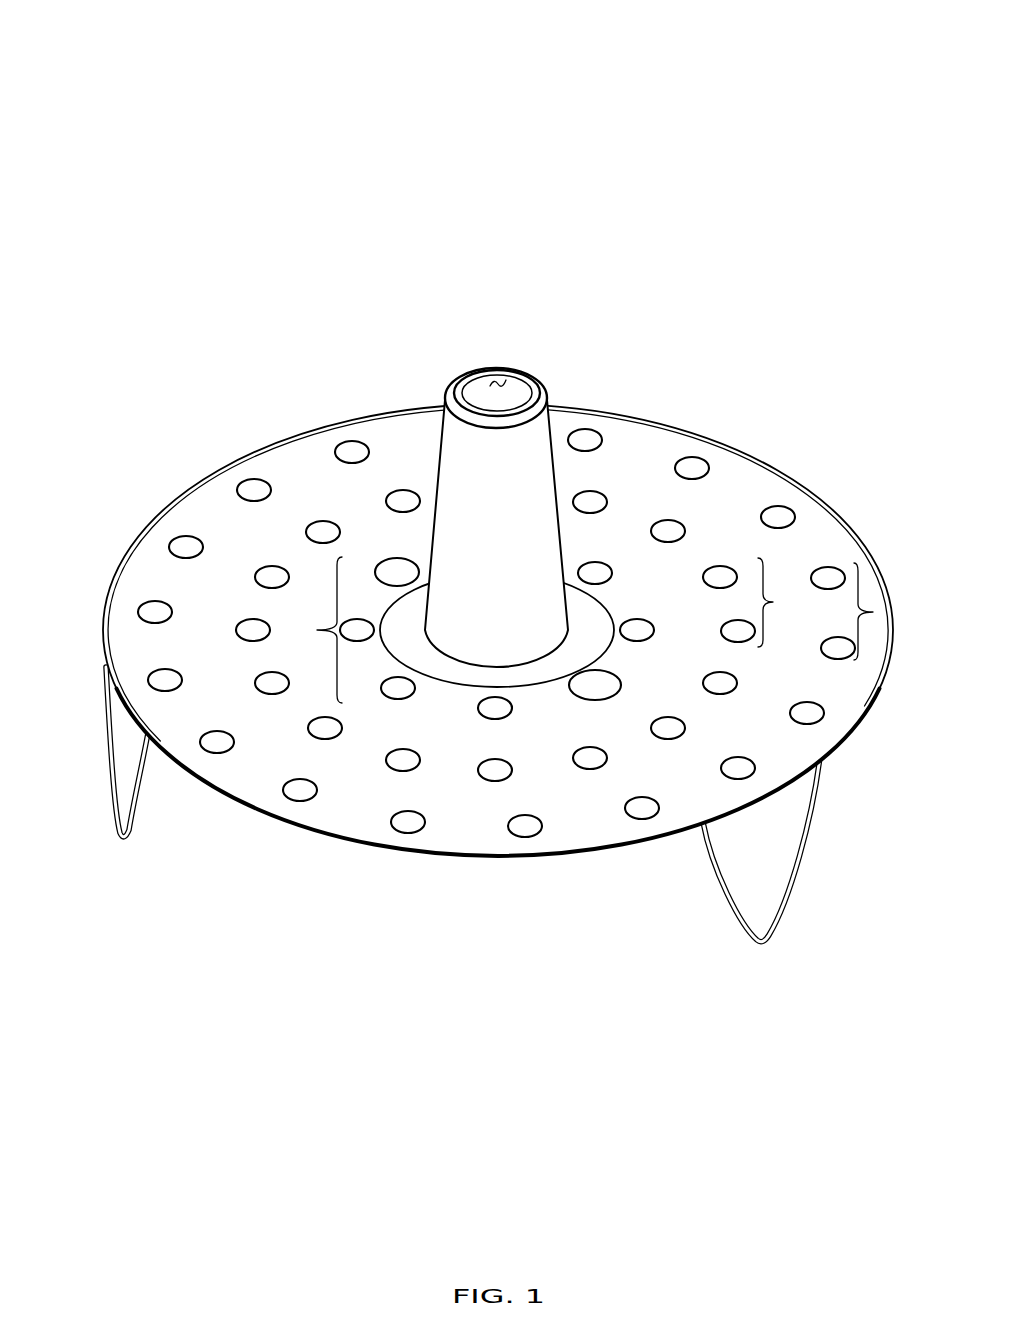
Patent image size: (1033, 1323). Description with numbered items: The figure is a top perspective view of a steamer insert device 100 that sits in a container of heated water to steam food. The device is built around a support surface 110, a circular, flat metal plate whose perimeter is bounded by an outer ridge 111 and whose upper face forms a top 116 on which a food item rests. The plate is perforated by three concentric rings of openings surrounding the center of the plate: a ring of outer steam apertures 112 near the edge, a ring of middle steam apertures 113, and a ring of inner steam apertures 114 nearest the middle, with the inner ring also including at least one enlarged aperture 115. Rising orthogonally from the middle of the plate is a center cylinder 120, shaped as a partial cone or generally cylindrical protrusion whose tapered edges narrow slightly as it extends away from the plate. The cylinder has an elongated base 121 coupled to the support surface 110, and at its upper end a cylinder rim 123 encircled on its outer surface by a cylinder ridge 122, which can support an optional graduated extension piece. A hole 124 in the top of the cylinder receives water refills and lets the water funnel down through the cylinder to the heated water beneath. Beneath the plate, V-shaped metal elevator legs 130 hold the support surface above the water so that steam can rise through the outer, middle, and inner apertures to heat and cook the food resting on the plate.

The steamer insert device 100 is at (490, 481).
The support surface 110 is at (500, 646).
The outer ridge 111 is at (548, 854).
The outer steam apertures 112 is at (872, 612).
The middle steam apertures 113 is at (773, 603).
The inner steam apertures 114 is at (317, 628).
The enlarged aperture 115 is at (393, 563).
The top 116 is at (738, 485).
The center cylinder 120 is at (587, 470).
The elongated base 121 is at (555, 483).
The cylinder ridge 122 is at (450, 388).
The cylinder rim 123 is at (478, 375).
The hole 124 is at (548, 377).
The elevator legs 130 is at (117, 848).